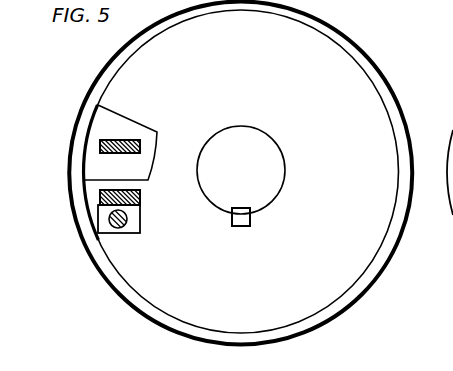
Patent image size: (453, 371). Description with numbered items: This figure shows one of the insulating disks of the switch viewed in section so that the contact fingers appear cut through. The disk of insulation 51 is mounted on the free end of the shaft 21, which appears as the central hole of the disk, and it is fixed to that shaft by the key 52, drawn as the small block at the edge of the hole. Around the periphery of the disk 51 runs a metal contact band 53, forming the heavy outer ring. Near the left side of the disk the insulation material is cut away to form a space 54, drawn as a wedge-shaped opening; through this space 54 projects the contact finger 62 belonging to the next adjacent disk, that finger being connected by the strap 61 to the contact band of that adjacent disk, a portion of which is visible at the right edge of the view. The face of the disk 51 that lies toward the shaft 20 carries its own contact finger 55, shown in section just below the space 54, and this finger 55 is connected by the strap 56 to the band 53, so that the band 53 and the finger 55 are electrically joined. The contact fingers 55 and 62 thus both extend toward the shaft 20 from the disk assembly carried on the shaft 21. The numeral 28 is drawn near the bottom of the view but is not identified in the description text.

The shaft 20 is at (223, 366).
The shaft 21 is at (279, 180).
The base 28 is at (368, 362).
The disk of insulation 51 is at (350, 66).
The key 52 is at (250, 226).
The metal contact band 53 is at (389, 83).
The space 54 is at (113, 121).
The contact finger 55 is at (140, 200).
The strap 56 is at (98, 217).
The strap 61 is at (452, 113).
The contact finger 62 is at (137, 140).